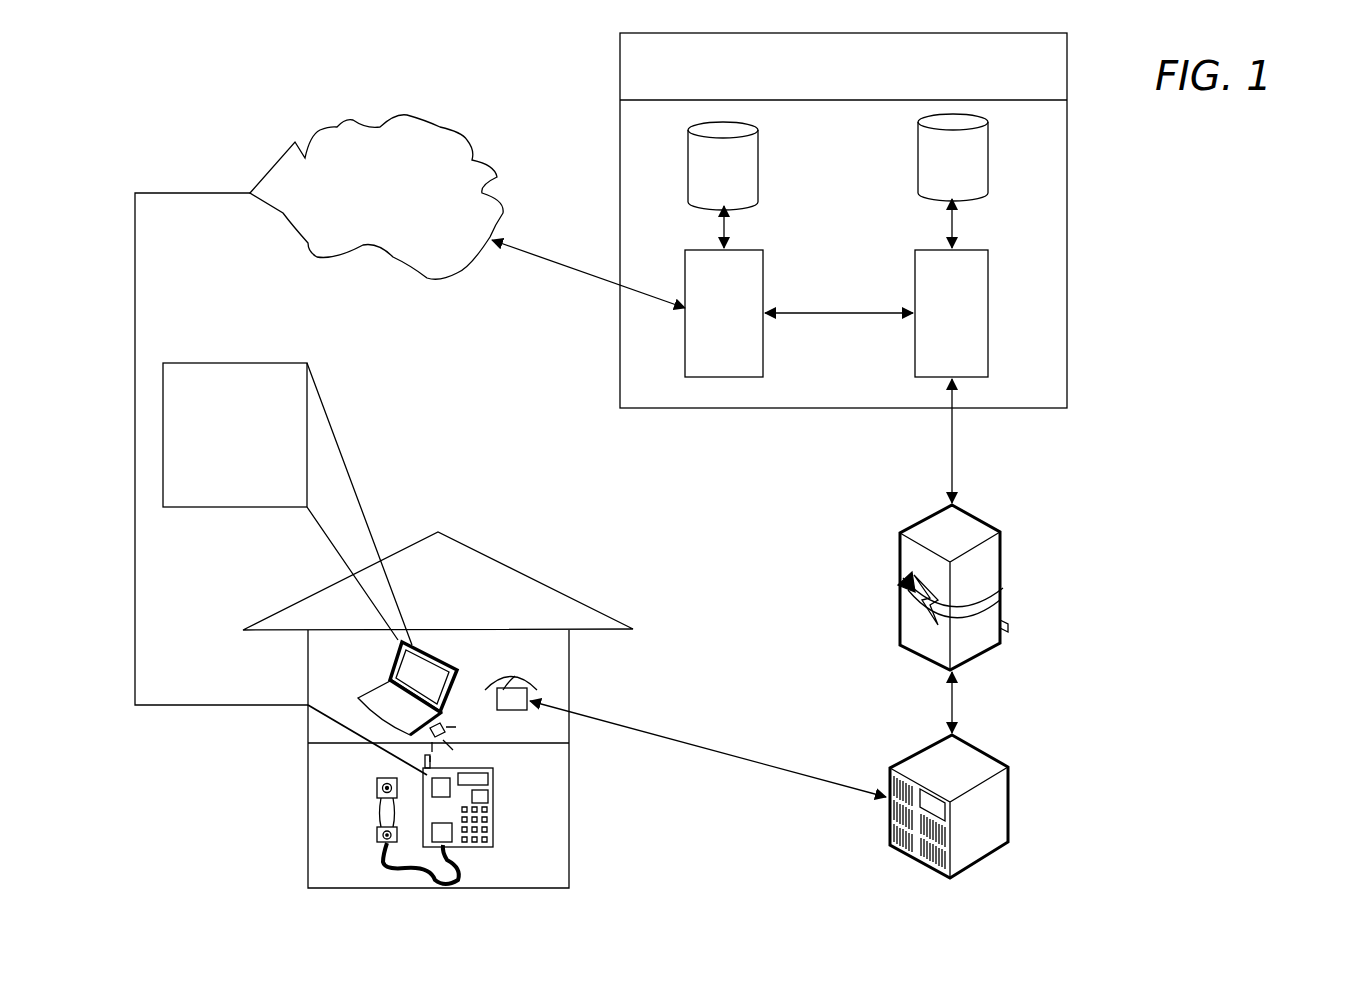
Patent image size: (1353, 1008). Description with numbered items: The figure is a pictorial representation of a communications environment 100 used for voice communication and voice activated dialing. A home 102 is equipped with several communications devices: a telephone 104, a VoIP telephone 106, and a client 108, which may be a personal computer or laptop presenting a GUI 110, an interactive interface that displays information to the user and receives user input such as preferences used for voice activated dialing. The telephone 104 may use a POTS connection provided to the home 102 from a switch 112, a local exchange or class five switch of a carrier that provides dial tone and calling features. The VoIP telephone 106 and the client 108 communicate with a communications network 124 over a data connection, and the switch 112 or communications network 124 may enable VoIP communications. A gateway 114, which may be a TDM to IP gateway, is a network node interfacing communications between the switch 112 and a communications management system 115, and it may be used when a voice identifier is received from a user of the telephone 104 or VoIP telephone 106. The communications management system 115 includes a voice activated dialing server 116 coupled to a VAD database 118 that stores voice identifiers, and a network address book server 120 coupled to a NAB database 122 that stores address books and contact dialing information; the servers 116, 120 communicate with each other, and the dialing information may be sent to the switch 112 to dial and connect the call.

The communications environment 100 is at (236, 381).
The home 102 is at (550, 581).
The telephone 104 is at (508, 682).
The VoIP telephone 106 is at (487, 835).
The client 108 is at (417, 673).
The GUI 110 is at (287, 504).
The switch 112 is at (983, 822).
The gateway 114 is at (968, 565).
The communications management system 115 is at (843, 220).
The voice activated dialing (VAD) server 116 is at (951, 313).
The VAD database 118 is at (953, 157).
The network address book (NAB) server 120 is at (724, 313).
The NAB database 122 is at (723, 166).
The communications network 124 is at (376, 197).